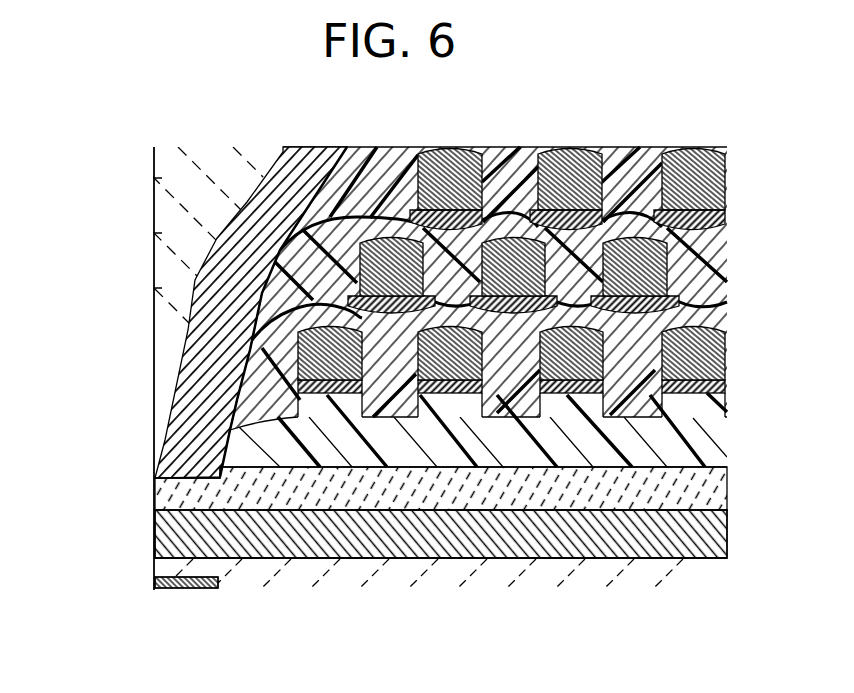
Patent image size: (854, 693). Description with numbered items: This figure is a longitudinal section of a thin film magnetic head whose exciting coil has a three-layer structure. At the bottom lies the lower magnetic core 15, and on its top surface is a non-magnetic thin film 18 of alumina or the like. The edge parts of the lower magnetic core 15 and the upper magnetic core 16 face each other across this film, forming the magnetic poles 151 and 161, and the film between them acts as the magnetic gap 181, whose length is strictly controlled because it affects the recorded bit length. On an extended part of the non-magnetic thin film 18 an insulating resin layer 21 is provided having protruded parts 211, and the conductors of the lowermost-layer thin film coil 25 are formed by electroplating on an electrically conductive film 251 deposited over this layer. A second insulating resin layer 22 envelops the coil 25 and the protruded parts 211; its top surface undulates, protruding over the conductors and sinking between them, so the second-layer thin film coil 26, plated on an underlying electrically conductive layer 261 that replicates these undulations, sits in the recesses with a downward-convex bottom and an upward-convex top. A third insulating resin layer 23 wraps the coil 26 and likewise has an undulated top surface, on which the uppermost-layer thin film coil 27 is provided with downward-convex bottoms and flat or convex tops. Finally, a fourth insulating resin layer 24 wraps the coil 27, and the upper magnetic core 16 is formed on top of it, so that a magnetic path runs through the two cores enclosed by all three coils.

The lower magnetic core 15 is at (347, 530).
The magnetic pole 151 is at (177, 540).
The upper magnetic core 16 is at (195, 302).
The magnetic pole 161 is at (177, 460).
The non-magnetic thin film 18 is at (447, 490).
The magnetic gap 181 is at (172, 494).
The insulating resin layer 21 is at (515, 450).
The protruded parts 211 is at (580, 405).
The insulating resin layer 22 is at (513, 343).
The third insulating resin layer 23 is at (337, 250).
The fourth insulating resin layer 24 is at (637, 175).
The lowermost-layer thin film coil 25 is at (590, 353).
The electrically conductive film 251 is at (605, 400).
The second-layer thin film coil 26 is at (643, 277).
The underlying electrically conductive layer 261 is at (668, 300).
The uppermost-layer thin film coil 27 is at (561, 160).